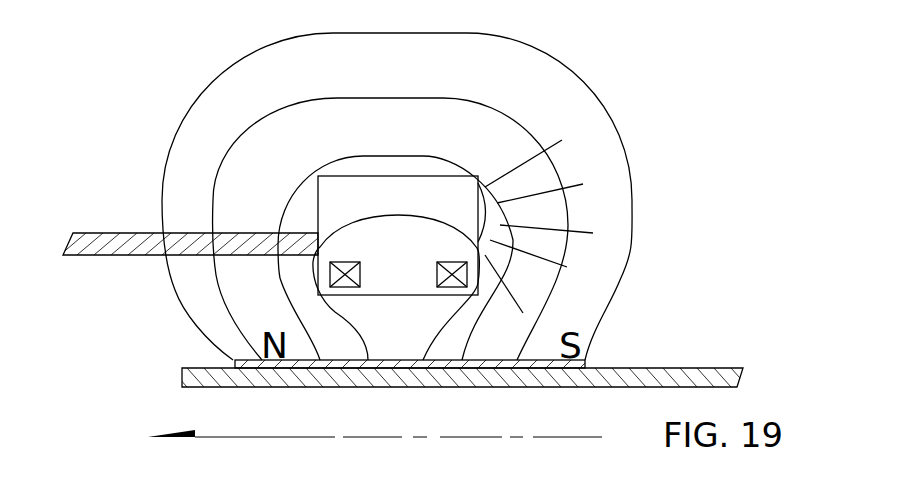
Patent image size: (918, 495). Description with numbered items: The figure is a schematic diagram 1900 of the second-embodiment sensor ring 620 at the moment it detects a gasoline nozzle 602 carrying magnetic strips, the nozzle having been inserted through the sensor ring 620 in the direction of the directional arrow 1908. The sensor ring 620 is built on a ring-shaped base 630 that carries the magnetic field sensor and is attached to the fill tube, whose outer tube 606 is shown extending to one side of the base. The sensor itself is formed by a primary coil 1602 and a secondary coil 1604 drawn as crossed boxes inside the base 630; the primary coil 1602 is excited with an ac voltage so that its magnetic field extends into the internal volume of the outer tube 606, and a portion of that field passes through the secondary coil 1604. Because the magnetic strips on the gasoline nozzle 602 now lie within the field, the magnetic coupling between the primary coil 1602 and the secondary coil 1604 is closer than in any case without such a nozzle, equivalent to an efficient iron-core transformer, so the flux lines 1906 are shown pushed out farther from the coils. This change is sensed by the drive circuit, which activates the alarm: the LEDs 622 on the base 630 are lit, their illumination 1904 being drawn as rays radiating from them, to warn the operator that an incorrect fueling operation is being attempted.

The schematic diagram 1900 is at (660, 80).
The flux lines 1906 is at (632, 230).
The illumination 1904 is at (550, 152).
The ring-shaped base 630 is at (430, 168).
The sensor ring 620 is at (340, 193).
The LEDs 622 is at (483, 183).
The primary coil 1602 is at (345, 273).
The secondary coil 1604 is at (452, 273).
The outer tube 606 is at (123, 238).
The gasoline nozzle 602 is at (670, 375).
The directional arrow 1908 is at (402, 436).